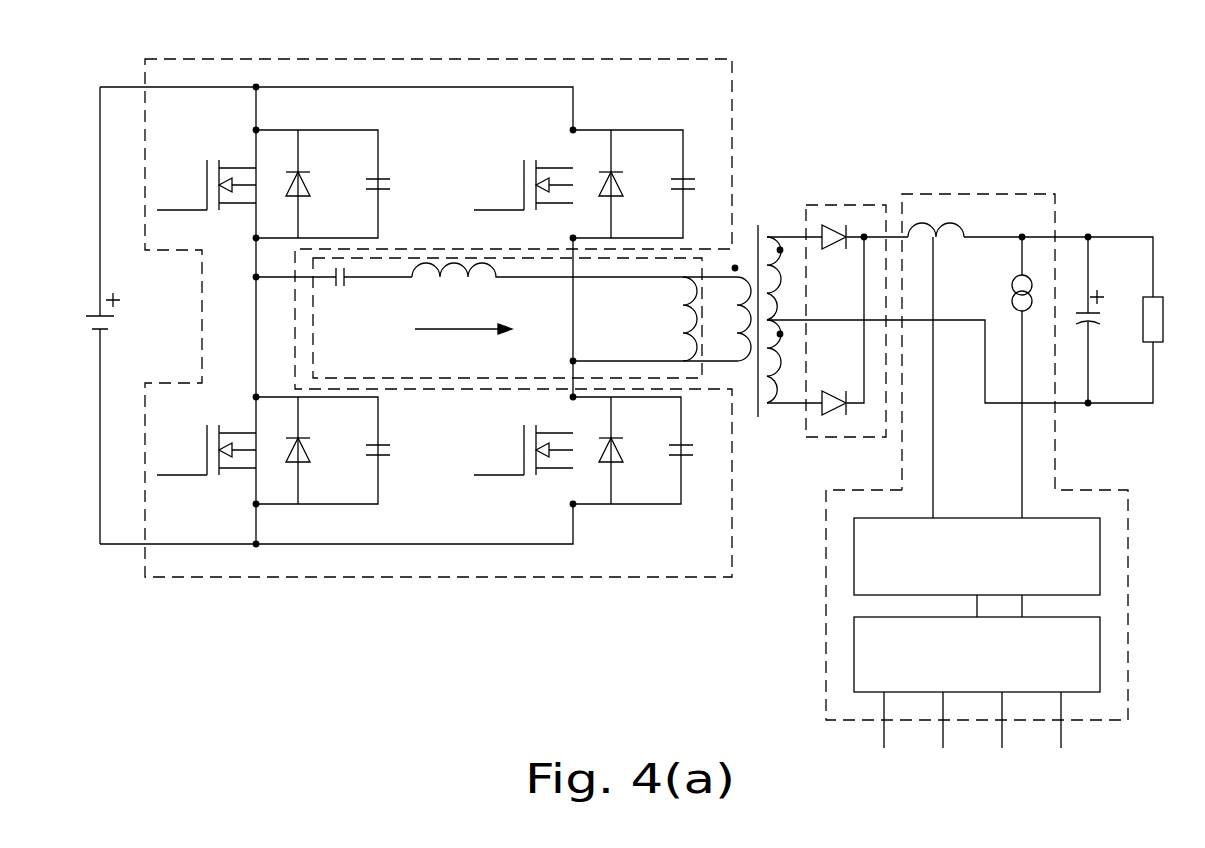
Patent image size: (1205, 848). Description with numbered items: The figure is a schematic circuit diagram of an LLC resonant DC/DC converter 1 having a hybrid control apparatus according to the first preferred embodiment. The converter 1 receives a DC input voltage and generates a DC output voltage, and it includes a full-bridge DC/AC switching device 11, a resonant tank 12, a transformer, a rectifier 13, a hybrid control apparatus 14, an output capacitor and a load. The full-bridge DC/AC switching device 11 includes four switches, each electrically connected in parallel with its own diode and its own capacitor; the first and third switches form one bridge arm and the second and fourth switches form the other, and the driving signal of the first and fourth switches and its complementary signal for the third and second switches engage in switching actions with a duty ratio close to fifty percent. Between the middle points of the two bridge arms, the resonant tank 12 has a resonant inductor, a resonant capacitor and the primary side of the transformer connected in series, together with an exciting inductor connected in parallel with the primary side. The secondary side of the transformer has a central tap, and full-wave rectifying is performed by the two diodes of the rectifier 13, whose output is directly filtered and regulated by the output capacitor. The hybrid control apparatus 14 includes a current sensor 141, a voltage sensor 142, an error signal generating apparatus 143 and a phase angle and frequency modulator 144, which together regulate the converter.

The LLC resonant DC/DC converter 1 is at (1099, 58).
The full-bridge DC/AC switching device 11 is at (492, 75).
The resonant tank 12 is at (672, 270).
The rectifier 13 is at (836, 214).
The hybrid control apparatus 14 is at (1070, 500).
The current sensor 141 is at (933, 224).
The voltage sensor 142 is at (1025, 275).
The error signal generating apparatus 143 is at (1090, 552).
The phase angle and frequency modulator 144 is at (1090, 646).